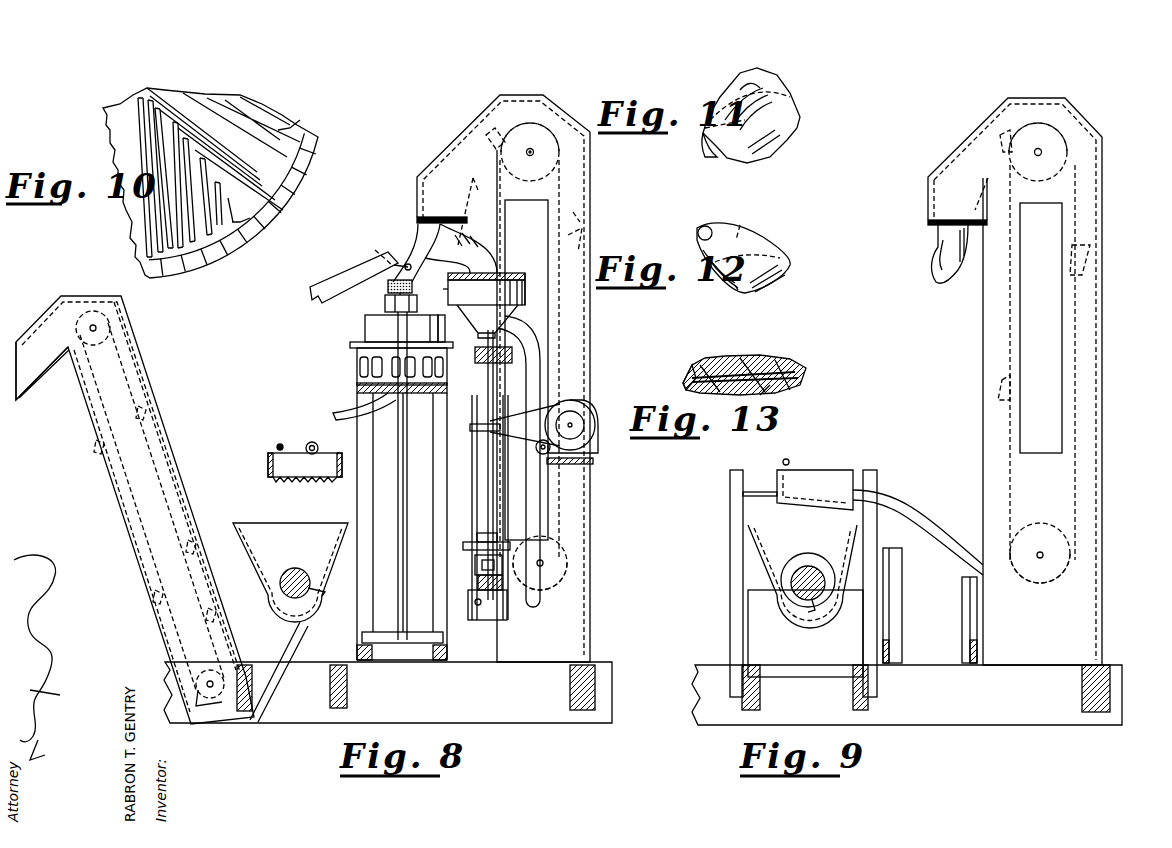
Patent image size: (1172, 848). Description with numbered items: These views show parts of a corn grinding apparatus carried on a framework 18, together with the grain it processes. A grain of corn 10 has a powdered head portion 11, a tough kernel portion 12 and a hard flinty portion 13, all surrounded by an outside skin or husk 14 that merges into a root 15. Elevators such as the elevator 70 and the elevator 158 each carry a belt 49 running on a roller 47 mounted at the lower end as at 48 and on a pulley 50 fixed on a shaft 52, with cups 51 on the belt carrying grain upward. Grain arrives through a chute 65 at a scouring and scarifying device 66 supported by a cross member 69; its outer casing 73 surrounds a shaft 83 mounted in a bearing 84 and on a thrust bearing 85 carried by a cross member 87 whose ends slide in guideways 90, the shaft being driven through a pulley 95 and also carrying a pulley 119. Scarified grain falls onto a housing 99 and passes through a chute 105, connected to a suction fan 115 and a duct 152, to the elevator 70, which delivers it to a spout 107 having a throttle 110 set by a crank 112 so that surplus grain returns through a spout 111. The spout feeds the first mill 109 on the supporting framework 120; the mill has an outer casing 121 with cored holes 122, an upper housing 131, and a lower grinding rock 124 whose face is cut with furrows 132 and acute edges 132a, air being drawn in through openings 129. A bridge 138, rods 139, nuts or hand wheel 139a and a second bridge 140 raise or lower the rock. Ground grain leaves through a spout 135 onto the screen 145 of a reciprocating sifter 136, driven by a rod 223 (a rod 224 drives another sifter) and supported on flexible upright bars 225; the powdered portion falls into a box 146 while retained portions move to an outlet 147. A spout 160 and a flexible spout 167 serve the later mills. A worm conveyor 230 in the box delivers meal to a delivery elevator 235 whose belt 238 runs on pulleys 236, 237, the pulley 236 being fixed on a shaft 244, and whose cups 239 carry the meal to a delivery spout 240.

In FIG. 11, the grain of corn 10 is at (716, 91).
In FIG. 12, the grain of corn 10 is at (781, 244).
In FIG. 13, the grain of corn 10 is at (814, 368).
In FIG. 11, the powdered head portion 11 is at (790, 92).
In FIG. 12, the powdered head portion 11 is at (790, 257).
In FIG. 13, the powdered head portion 11 is at (780, 360).
In FIG. 11, the tough kernel portion 12 is at (703, 134).
In FIG. 12, the tough kernel portion 12 is at (738, 289).
In FIG. 13, the tough kernel portion 12 is at (765, 392).
In FIG. 11, the hard flinty portion 13 is at (780, 150).
In FIG. 12, the hard flinty portion 13 is at (818, 300).
In FIG. 13, the hard flinty portion 13 is at (730, 358).
In FIG. 11, the outside skin or husk 14 is at (780, 118).
In FIG. 12, the outside skin or husk 14 is at (762, 240).
In FIG. 13, the outside skin or husk 14 is at (752, 357).
In FIG. 11, the root 15 is at (705, 155).
In FIG. 12, the root 15 is at (698, 233).
In FIG. 13, the root 15 is at (680, 383).
In FIG. 8, the framework 18 is at (592, 664).
In FIG. 9, the framework 18 is at (1114, 664).
In FIG. 8, the roller 47 is at (550, 528).
In FIG. 9, the roller 47 is at (1045, 525).
In FIG. 8, the roller mounting 48 is at (540, 563).
In FIG. 9, the roller mounting 48 is at (1040, 553).
In FIG. 8, the belt 49 is at (498, 170).
In FIG. 9, the belt 49 is at (1072, 300).
In FIG. 8, the second pulley 50 is at (535, 176).
In FIG. 9, the second pulley 50 is at (1034, 178).
In FIG. 8, the cups 51 is at (484, 135).
In FIG. 9, the cups 51 is at (998, 148).
In FIG. 8, the shaft 52 is at (537, 142).
In FIG. 9, the shaft 52 is at (1046, 142).
In FIG. 8, the pipe or chute 65 is at (476, 248).
In FIG. 8, the scouring and scarifying device 66 is at (443, 292).
In FIG. 8, the cross member 69 is at (525, 273).
In FIG. 8, the column 70 is at (590, 200).
In FIG. 8, the outer casing 73 is at (486, 289).
In FIG. 8, the shaft 83 is at (486, 508).
In FIG. 8, the bearing 84 is at (436, 318).
In FIG. 8, the thrust bearing 85 is at (475, 566).
In FIG. 8, the cross member 87 is at (478, 584).
In FIG. 8, the guideways 90 is at (475, 620).
In FIG. 8, the pulley 95 is at (463, 546).
In FIG. 8, the housing 99 is at (487, 321).
In FIG. 8, the chute 105 is at (514, 330).
In FIG. 8, the spout 107 is at (418, 226).
In FIG. 8, the first mill 109 is at (350, 346).
In FIG. 8, the throttle 110 is at (388, 250).
In FIG. 8, the spout 111 is at (334, 280).
In FIG. 8, the crank 112 is at (411, 265).
In FIG. 8, the suction fan 115 is at (593, 462).
In FIG. 8, the pulley 119 is at (470, 428).
In FIG. 8, the supporting framework 120 is at (358, 510).
In FIG. 9, the supporting framework 120 is at (960, 617).
In FIG. 8, the outer casing 121 is at (357, 385).
In FIG. 8, the cored holes 122 is at (357, 358).
In FIG. 10, the lower grinding rock 124 is at (290, 197).
In FIG. 8, the openings 129 is at (402, 450).
In FIG. 8, the upper housing 131 is at (365, 330).
In FIG. 10, the furrows 132 is at (314, 156).
In FIG. 10, the acute cutting edges 132a is at (285, 118).
In FIG. 8, the spout 135 is at (340, 410).
In FIG. 8, the reciprocating sifter or bolt 136 is at (268, 456).
In FIG. 9, the reciprocating sifter or bolt 136 is at (840, 456).
In FIG. 8, the bridge 138 is at (362, 636).
In FIG. 8, the rods 139 is at (390, 292).
In FIG. 8, the nuts or hand wheel 139a is at (388, 294).
In FIG. 8, the second bridge 140 is at (417, 305).
In FIG. 8, the screen 145 is at (304, 481).
In FIG. 8, the box 146 is at (240, 522).
In FIG. 9, the box 146 is at (750, 528).
In FIG. 8, the outlet 147 is at (565, 410).
In FIG. 8, the duct 152 is at (550, 448).
In FIG. 9, the elevator 158 is at (1102, 176).
In FIG. 9, the spout 160 is at (928, 252).
In FIG. 9, the flexible spout 167 is at (906, 508).
In FIG. 8, the rod 223 is at (279, 444).
In FIG. 9, the rod 223 is at (786, 459).
In FIG. 8, the rod 224 is at (314, 442).
In FIG. 9, the flexible upright bars or flats 225 is at (730, 522).
In FIG. 8, the worm conveyor 230 is at (304, 560).
In FIG. 9, the worm conveyor 230 is at (808, 554).
In FIG. 8, the delivery elevator 235 is at (132, 553).
In FIG. 8, the pulley 236 is at (208, 670).
In FIG. 8, the pulley 237 is at (94, 345).
In FIG. 8, the belt 238 is at (140, 368).
In FIG. 8, the cups 239 is at (150, 412).
In FIG. 8, the delivery spout 240 is at (22, 398).
In FIG. 8, the shaft 244 is at (214, 700).